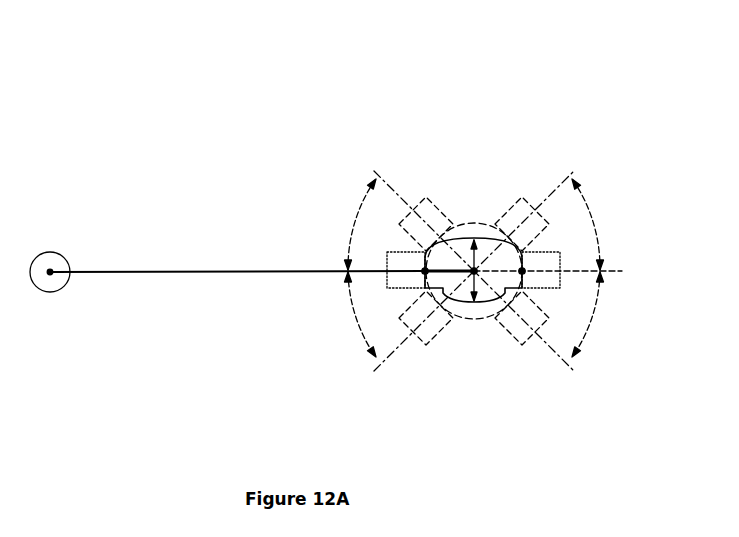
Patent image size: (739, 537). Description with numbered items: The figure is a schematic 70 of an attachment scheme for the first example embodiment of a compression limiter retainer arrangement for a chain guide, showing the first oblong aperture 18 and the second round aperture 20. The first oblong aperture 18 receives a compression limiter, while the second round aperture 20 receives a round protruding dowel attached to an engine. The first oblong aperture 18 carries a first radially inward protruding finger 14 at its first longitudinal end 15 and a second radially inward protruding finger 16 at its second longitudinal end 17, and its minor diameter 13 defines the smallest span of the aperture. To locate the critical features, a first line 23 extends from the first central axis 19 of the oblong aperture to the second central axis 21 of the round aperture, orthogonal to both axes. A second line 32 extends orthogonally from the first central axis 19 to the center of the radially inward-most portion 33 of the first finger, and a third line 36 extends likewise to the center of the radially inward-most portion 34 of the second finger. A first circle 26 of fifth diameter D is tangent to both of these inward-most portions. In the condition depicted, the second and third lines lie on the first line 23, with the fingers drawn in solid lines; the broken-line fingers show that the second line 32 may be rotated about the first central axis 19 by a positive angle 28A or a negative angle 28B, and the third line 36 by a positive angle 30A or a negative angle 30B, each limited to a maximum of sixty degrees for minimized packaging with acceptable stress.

The minor diameter 13 is at (474, 303).
The first radially inward protruding finger 14 is at (425, 271).
The first longitudinal end 15 is at (425, 289).
The second radially inward protruding finger 16 is at (552, 280).
The second longitudinal end 17 is at (522, 271).
The first oblong aperture 18 is at (463, 236).
The first central axis 19 is at (489, 262).
The second round aperture 20 is at (50, 252).
The second central axis 21 is at (52, 274).
The first line 23 is at (155, 271).
The first circle 26 is at (462, 318).
The positive angle 28A is at (363, 196).
The negative angle 28B is at (353, 313).
The positive angle 30A is at (597, 212).
The negative angle 30B is at (590, 322).
The second line 32 is at (452, 262).
The radially inward-most portion 33 is at (425, 271).
The radially inward-most portion 34 is at (522, 271).
The third line 36 is at (495, 277).
The schematic 70 is at (557, 127).